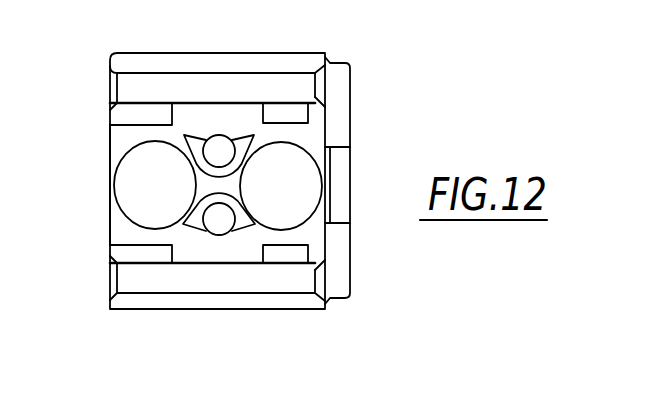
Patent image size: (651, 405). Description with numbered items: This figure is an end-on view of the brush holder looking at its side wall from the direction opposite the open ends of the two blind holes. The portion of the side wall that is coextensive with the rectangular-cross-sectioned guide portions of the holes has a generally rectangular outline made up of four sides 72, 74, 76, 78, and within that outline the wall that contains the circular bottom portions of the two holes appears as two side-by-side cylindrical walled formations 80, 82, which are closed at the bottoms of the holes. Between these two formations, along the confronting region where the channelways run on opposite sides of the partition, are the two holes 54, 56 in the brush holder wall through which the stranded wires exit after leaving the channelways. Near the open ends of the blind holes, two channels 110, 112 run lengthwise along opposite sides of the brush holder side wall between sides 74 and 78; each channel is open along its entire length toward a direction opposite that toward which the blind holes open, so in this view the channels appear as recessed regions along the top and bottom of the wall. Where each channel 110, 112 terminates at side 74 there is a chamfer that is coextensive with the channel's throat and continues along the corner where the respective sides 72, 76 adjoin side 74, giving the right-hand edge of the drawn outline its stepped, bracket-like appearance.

The channel 110 is at (110, 86).
The channel 112 is at (110, 281).
The side 78 is at (110, 143).
The cylindrical walled formation 82 is at (118, 210).
The cylindrical walled formation 80 is at (305, 218).
The hole 54 is at (228, 133).
The hole 56 is at (215, 237).
The side 72 is at (221, 136).
The side 76 is at (228, 267).
The side 74 is at (326, 133).